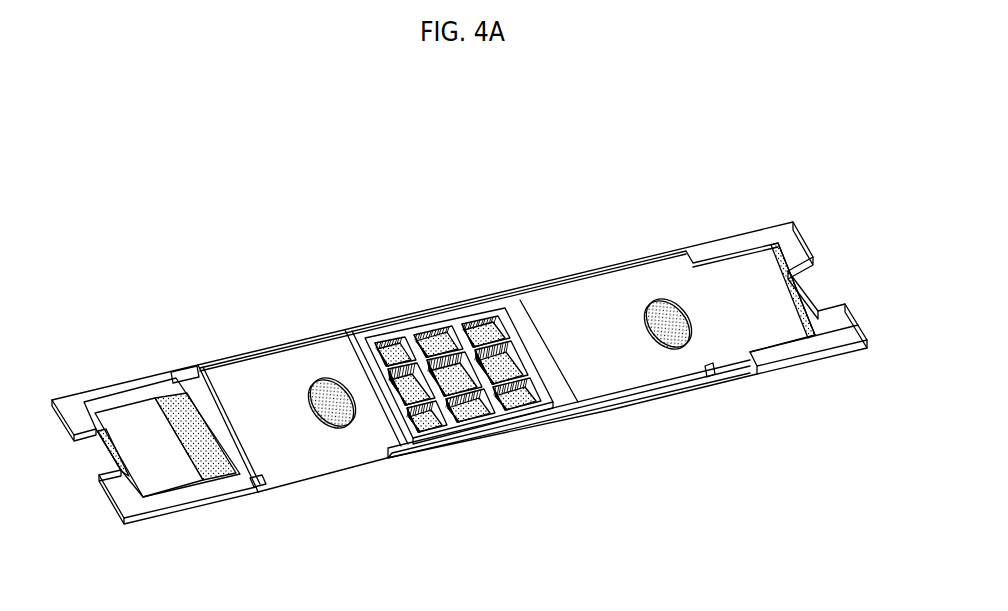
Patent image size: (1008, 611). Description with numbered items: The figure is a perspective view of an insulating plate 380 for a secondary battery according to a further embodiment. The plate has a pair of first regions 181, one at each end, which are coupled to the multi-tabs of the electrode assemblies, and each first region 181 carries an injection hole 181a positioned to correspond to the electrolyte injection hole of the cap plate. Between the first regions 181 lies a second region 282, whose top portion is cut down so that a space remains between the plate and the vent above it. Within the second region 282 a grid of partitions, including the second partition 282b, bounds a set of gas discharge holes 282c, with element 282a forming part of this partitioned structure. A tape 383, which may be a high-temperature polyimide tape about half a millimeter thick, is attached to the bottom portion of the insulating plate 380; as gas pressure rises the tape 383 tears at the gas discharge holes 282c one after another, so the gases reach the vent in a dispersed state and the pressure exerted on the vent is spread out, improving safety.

The insulating plate 380 is at (765, 130).
The first region 181 is at (238, 383).
The injection hole 181a is at (340, 398).
The second region 282 is at (493, 381).
The cell bottom 282a is at (492, 400).
The second partition 282b is at (483, 330).
The gas discharge holes 282c is at (418, 398).
The tape 383 is at (557, 397).